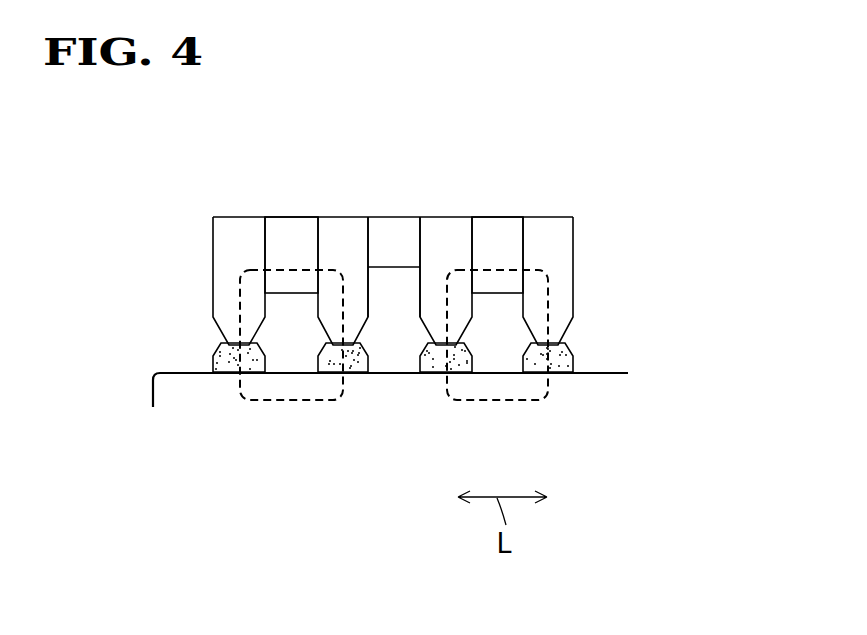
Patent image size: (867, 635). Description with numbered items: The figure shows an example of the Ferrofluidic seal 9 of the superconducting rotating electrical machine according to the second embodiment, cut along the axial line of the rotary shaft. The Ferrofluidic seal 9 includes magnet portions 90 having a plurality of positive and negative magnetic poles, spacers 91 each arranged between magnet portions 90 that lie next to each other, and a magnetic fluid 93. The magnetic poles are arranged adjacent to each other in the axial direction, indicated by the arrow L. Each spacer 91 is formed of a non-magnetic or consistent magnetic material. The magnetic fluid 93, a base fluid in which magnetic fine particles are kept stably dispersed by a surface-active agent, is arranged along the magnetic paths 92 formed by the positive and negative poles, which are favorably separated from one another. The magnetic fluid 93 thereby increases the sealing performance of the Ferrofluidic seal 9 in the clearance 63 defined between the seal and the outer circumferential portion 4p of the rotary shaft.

The Ferrofluidic seal 9 is at (497, 156).
The magnet portion 90 is at (289, 227).
The spacer 91 is at (243, 232).
The magnetic path 92 is at (240, 277).
The magnetic fluid 93 is at (228, 368).
The clearance 63 is at (205, 357).
The outer circumferential portion 4p is at (610, 372).